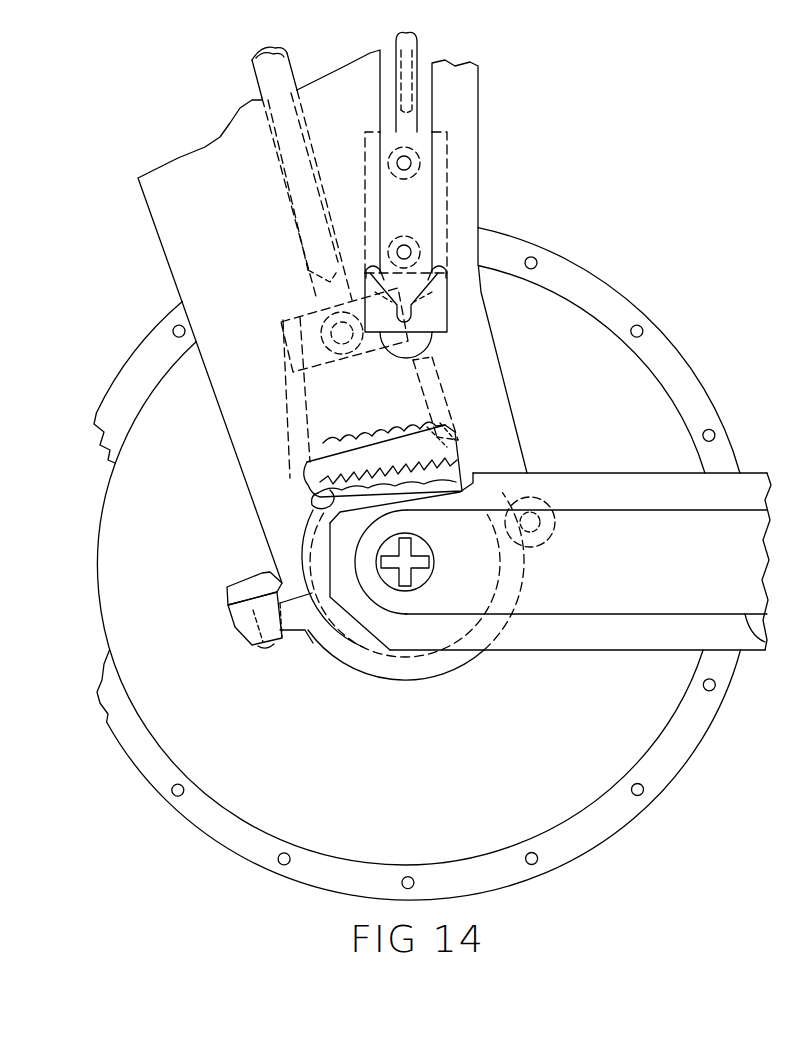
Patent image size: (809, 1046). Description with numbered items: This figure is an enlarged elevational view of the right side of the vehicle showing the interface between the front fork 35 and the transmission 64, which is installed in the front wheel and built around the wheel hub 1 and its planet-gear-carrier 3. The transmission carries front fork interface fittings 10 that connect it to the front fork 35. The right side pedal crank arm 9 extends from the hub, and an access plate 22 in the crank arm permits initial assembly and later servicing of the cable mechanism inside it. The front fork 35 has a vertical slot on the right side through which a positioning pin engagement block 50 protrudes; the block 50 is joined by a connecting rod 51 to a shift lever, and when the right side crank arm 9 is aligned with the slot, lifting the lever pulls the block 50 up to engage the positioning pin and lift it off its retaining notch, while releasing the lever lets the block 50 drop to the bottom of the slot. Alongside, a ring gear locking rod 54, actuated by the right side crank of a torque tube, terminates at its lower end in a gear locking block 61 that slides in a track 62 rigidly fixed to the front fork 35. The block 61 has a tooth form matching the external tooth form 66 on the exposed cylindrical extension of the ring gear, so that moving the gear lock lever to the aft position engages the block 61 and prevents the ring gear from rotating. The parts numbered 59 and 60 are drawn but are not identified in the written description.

The wheel hub 1 is at (683, 332).
The planet-gear-carrier 3 is at (775, 457).
The right side pedal crank arm 9 is at (770, 470).
The front fork interface fittings 10 is at (367, 650).
The access plate 22 is at (762, 656).
The front fork 35 is at (480, 135).
The positioning pin engagement block 50 is at (447, 288).
The connecting rod 51 is at (420, 50).
The ring gear locking rod 54 is at (252, 72).
The arcuate plate 59 is at (435, 683).
The bolt 60 is at (250, 578).
The gear locking block 61 is at (455, 460).
The track 62 is at (443, 398).
The transmission 64 is at (592, 273).
The external tooth form 66 is at (318, 494).